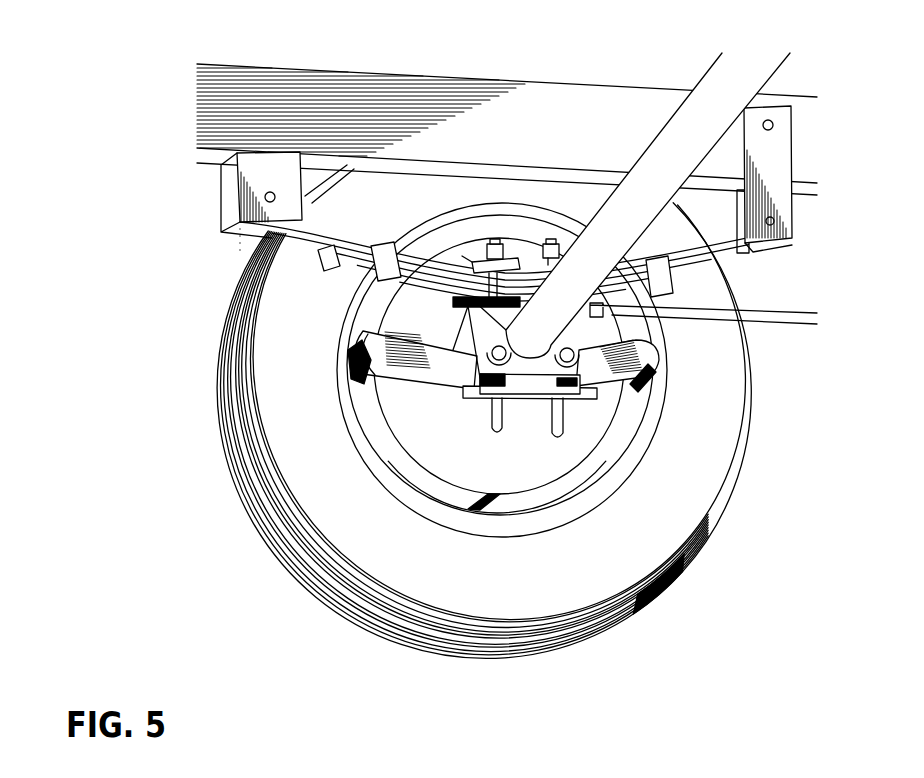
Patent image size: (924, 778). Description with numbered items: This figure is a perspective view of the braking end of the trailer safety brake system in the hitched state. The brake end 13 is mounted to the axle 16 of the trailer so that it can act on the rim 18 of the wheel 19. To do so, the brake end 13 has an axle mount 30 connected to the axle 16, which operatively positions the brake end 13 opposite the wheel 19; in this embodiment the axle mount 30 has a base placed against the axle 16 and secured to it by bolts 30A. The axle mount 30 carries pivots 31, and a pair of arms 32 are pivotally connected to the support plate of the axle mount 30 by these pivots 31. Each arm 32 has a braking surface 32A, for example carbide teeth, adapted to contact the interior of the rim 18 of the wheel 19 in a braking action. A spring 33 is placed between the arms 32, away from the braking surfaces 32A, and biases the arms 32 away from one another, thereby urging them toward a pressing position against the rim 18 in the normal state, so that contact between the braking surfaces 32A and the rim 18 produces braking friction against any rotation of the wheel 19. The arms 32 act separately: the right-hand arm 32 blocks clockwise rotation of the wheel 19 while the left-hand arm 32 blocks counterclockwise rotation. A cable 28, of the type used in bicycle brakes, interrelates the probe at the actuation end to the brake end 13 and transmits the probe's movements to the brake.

The brake end 13 is at (185, 486).
The axle 16 is at (711, 75).
The rim 18 is at (642, 437).
The wheel 19 is at (722, 416).
The cable 28 is at (686, 295).
The axle mount 30 is at (532, 398).
The bolts 30A is at (497, 435).
The pivots 31 is at (565, 350).
The arms 32 is at (436, 362).
The braking surfaces 32A is at (366, 366).
The spring 33 is at (505, 325).